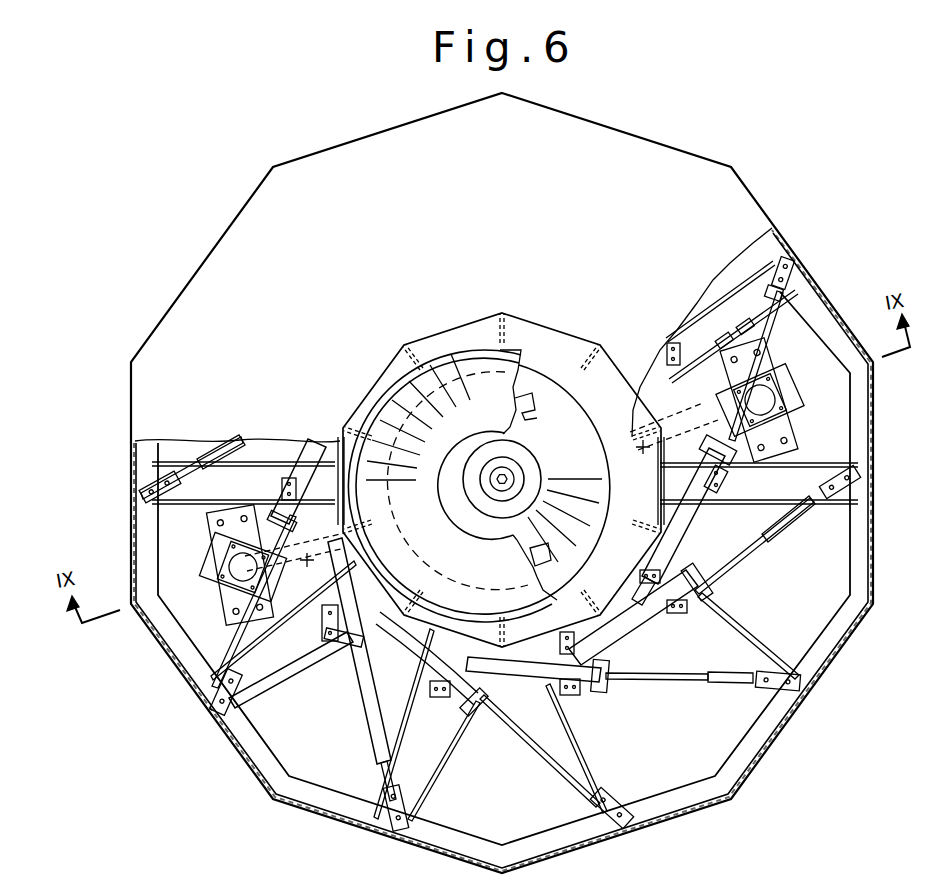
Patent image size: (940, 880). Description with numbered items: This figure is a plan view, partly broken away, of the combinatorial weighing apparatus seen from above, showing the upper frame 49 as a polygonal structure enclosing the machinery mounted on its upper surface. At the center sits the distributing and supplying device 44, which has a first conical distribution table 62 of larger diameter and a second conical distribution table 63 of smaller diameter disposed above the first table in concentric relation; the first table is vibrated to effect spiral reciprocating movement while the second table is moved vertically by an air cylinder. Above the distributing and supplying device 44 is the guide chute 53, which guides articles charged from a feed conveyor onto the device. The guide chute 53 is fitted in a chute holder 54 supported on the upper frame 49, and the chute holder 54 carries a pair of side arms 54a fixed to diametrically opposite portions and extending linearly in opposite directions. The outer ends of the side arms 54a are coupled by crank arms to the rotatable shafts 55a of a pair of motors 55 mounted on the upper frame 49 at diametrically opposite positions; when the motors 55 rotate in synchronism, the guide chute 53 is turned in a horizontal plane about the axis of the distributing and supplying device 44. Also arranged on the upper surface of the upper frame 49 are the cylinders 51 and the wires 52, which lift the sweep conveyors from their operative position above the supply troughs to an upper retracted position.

The upper frame 49 is at (663, 156).
The distributing and supplying device 44 is at (554, 360).
The guide chute 53 is at (466, 360).
The first conical distribution table 62 is at (580, 414).
The second conical distribution table 63 is at (532, 468).
The chute holder 54 is at (525, 412).
The side arms 54a is at (305, 548).
The motors 55 is at (230, 556).
The rotatable shafts 55a is at (243, 603).
The cylinders 51 is at (398, 636).
The wires 52 is at (583, 793).